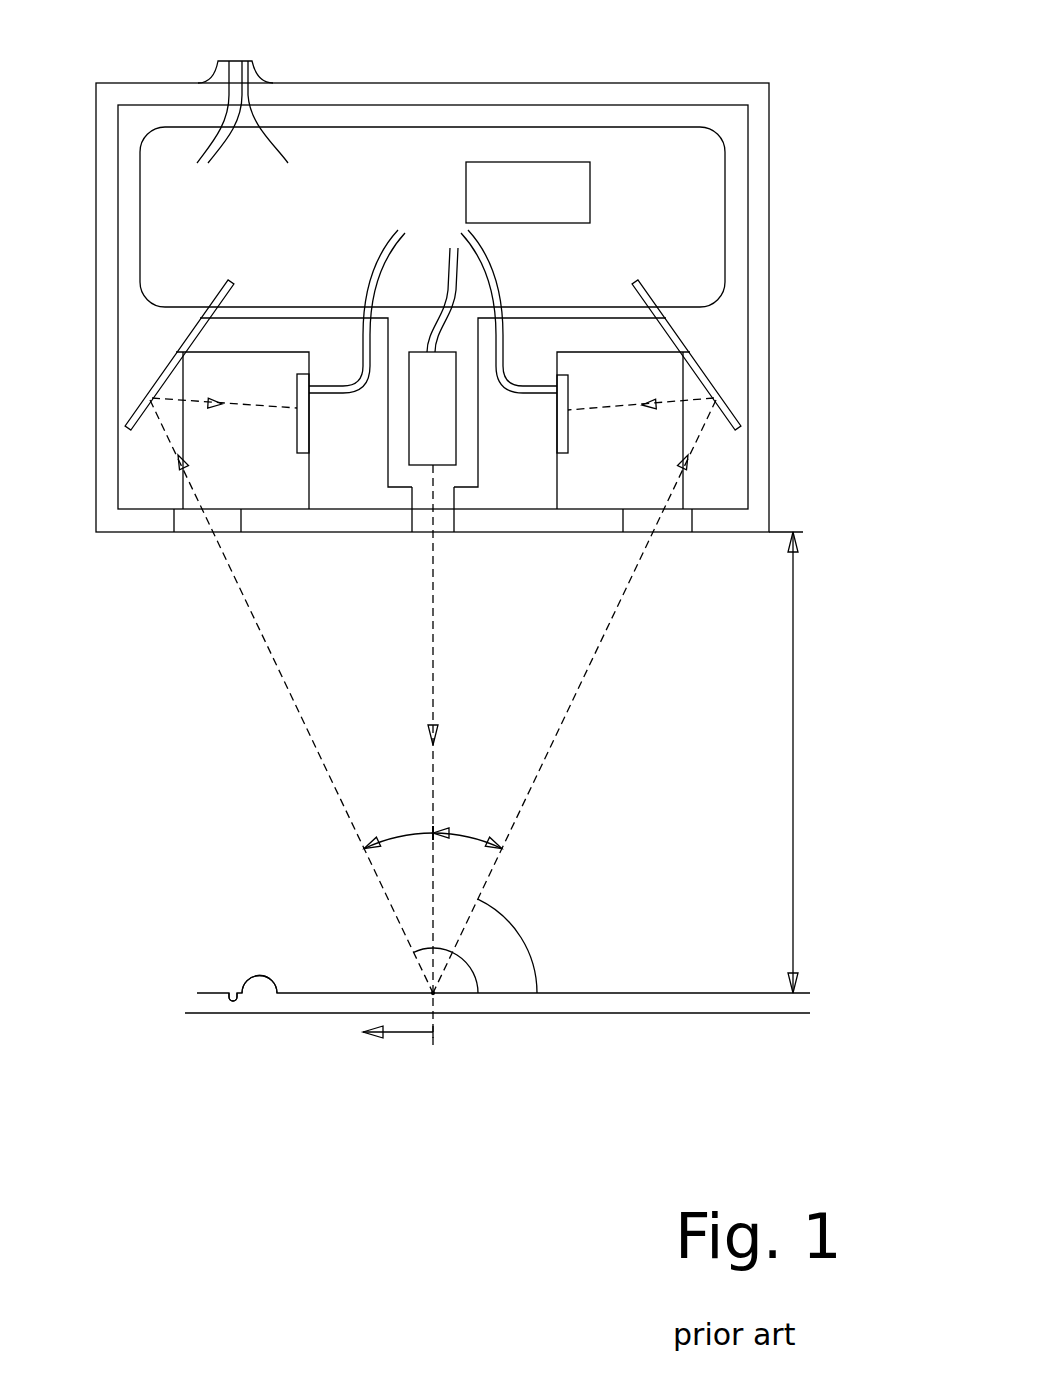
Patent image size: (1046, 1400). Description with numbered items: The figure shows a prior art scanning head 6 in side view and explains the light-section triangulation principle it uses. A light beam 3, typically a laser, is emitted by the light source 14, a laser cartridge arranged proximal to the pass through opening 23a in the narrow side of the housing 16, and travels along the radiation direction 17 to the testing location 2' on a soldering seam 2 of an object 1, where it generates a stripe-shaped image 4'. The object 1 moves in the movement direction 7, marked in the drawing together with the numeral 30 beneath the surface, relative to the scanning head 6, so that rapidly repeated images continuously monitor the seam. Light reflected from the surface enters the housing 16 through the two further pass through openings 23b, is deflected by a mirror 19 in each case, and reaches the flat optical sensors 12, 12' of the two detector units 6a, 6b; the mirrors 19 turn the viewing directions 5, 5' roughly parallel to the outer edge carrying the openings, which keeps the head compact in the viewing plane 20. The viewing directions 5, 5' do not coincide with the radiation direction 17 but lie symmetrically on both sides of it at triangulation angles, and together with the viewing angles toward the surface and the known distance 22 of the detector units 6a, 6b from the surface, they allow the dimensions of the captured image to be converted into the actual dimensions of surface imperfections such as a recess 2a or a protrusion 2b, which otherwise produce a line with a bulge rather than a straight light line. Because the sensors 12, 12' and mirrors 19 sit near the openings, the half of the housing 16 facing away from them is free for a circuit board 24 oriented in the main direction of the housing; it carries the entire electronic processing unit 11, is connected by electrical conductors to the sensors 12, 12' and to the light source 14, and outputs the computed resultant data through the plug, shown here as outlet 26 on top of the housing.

The object 1 is at (503, 989).
The soldering seam 2 is at (503, 970).
The recess 2a is at (236, 990).
The protrusion 2b is at (265, 987).
The testing location 2' is at (482, 1029).
The light beam 3 is at (480, 757).
The image 4' is at (482, 1029).
The viewing direction 5 is at (291, 695).
The viewing direction 5' is at (574, 695).
The scanning head 6 is at (636, 78).
The detector unit 6a is at (294, 369).
The detector unit 6b is at (572, 369).
The movement direction 7 is at (398, 1051).
The electronic processing unit 11 is at (530, 192).
The optical sensor 12 is at (333, 413).
The optical sensor 12' is at (533, 414).
The light source 14 is at (433, 356).
The housing 16 is at (108, 352).
The radiation direction 17 is at (437, 655).
The mirror 19 is at (140, 408).
The viewing plane 20 is at (487, 627).
The surface 22 is at (793, 743).
The pass through opening 23a is at (428, 522).
The pass through opening 23b is at (197, 520).
The circuit board 24 is at (142, 251).
The outlet 26 is at (257, 77).
The feed direction 30 is at (403, 1032).